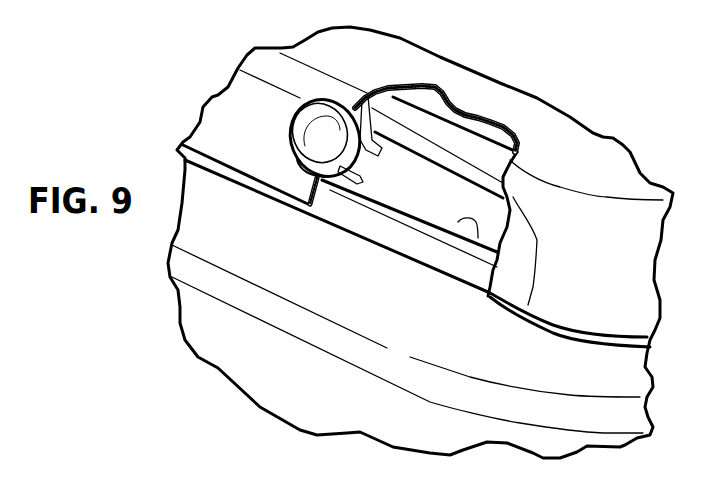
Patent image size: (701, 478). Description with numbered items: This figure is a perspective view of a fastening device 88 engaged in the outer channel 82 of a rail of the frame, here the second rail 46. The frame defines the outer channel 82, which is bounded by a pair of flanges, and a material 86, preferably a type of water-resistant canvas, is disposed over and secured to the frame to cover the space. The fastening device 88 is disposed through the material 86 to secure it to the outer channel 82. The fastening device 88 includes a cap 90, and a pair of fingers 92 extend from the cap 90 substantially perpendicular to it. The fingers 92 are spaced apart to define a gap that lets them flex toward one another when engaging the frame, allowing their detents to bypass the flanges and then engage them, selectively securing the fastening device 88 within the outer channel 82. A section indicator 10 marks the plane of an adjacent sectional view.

The section line of FIG. 10 is at (450, 72).
The second rail 46 is at (398, 223).
The outer channel 82 is at (458, 222).
The material 86 is at (588, 145).
The fastening device 88 is at (310, 109).
The cap 90 is at (310, 132).
The fingers 92 is at (370, 140).